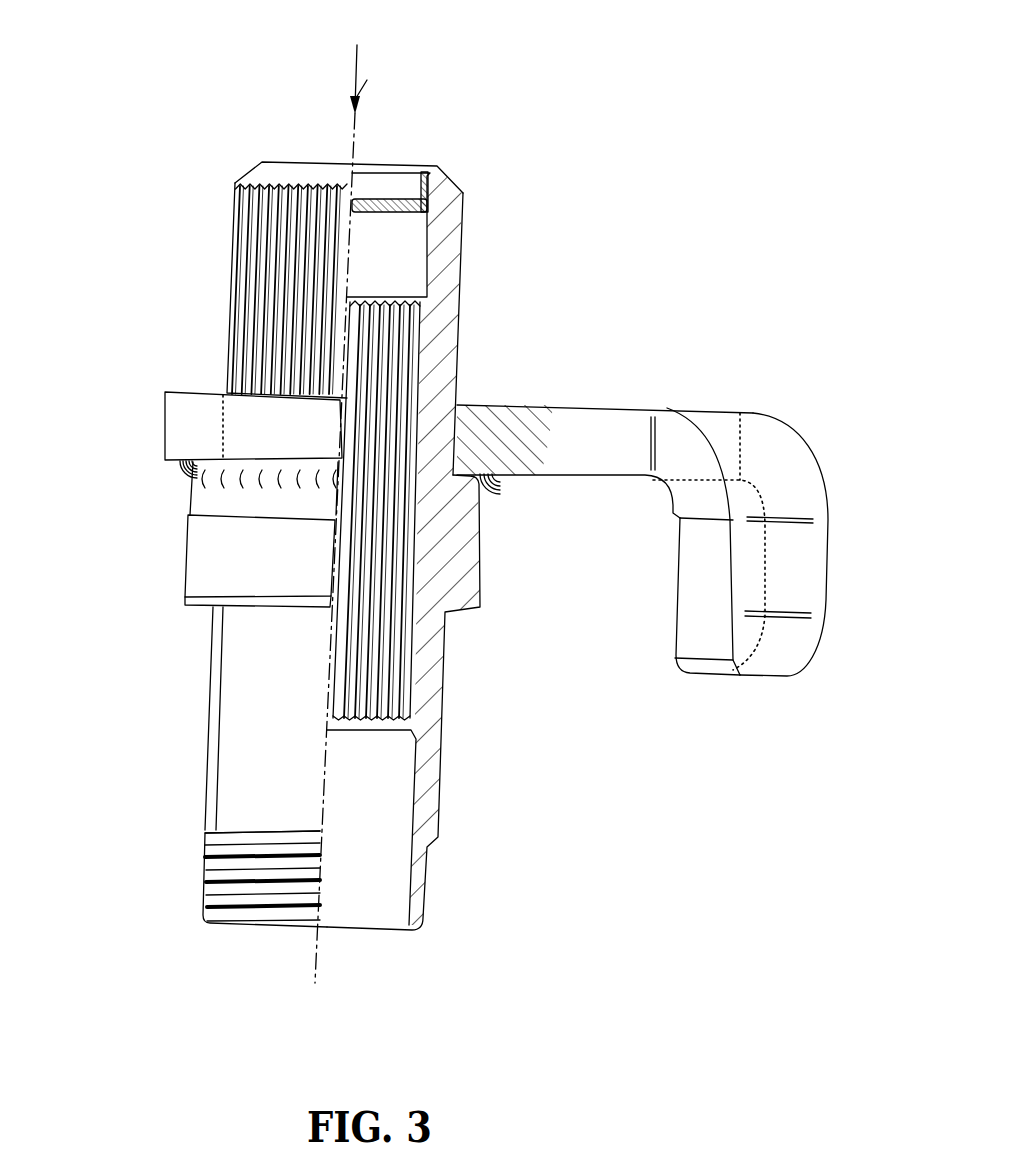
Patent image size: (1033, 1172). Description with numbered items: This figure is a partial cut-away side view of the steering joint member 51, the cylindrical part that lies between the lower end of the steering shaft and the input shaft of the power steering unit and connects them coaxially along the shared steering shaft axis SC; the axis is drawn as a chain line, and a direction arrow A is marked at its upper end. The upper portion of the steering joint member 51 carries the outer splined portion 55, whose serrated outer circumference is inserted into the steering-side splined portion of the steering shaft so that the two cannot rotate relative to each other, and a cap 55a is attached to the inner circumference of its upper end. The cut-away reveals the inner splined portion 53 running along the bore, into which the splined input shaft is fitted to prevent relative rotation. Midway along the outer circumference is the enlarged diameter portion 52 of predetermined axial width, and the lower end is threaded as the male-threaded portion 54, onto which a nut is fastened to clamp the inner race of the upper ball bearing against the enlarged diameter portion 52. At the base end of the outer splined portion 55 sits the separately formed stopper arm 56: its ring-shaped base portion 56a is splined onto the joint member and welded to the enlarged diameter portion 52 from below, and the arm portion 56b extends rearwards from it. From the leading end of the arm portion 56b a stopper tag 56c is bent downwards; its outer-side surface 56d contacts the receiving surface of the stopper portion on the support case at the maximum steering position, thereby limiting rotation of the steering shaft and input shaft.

The steering joint member 51 is at (592, 212).
The enlarged diameter portion 52 is at (198, 568).
The inner splined portion 53 is at (385, 672).
The male-threaded portion 54 is at (252, 905).
The outer splined portion 55 is at (255, 272).
The cap 55a is at (395, 203).
The stopper arm 56 is at (692, 486).
The base portion 56a is at (172, 432).
The arm portion 56b is at (587, 410).
The stopper tag 56c is at (808, 577).
The outer-side surface 56d is at (688, 625).
The steering shaft axis SC is at (350, 142).
The direction arrow A is at (358, 63).